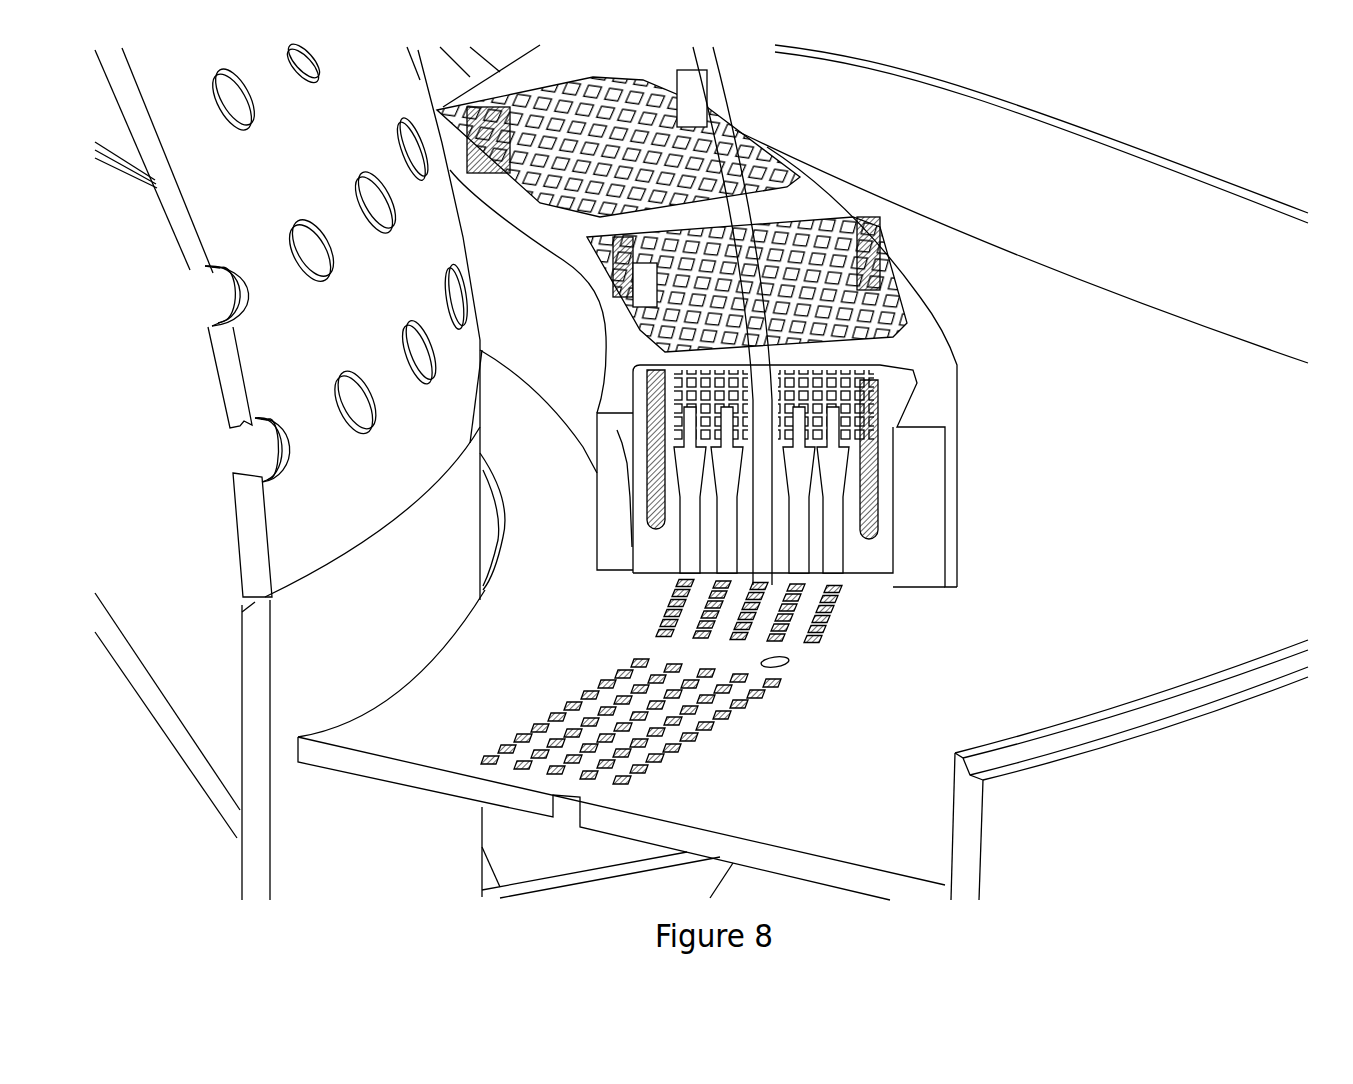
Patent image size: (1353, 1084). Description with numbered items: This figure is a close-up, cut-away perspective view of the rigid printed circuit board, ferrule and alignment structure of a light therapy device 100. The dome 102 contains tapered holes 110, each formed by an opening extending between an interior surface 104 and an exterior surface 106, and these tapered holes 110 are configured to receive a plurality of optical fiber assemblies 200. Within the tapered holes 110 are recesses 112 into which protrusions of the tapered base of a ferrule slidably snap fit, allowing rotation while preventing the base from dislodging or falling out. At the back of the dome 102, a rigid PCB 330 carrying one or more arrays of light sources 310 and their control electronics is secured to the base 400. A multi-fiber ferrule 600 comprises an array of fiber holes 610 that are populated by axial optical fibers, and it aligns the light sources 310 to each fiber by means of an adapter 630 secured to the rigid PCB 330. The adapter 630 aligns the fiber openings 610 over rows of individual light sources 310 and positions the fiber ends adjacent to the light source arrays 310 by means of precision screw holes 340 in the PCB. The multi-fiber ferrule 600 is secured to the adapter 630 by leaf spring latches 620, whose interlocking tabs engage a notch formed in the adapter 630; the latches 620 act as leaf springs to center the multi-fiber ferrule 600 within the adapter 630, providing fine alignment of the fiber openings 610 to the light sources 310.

The light therapy device 100 is at (1180, 870).
The dome 102 is at (236, 527).
The interior surface 104 is at (192, 268).
The exterior surface 106 is at (195, 237).
The tapered holes 110 is at (328, 231).
The recesses 112 is at (213, 352).
The optical fiber assemblies 200 is at (752, 130).
The light sources 310 is at (653, 608).
The rigid PCB 330 is at (425, 781).
The precision screw holes 340 is at (795, 662).
The base 400 is at (238, 630).
The multi-fiber ferrule 600 is at (652, 550).
The fiber holes 610 is at (850, 550).
The leaf spring latches 620 is at (893, 458).
The adapter 630 is at (962, 366).